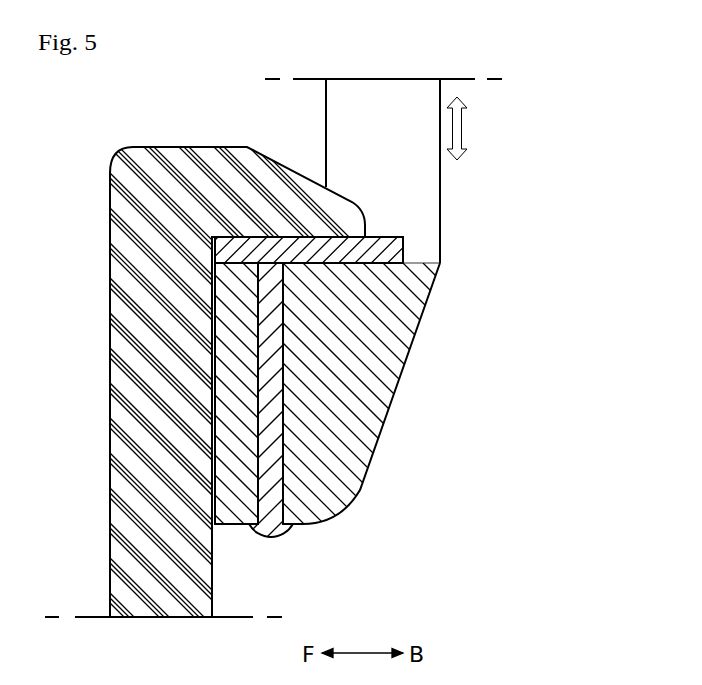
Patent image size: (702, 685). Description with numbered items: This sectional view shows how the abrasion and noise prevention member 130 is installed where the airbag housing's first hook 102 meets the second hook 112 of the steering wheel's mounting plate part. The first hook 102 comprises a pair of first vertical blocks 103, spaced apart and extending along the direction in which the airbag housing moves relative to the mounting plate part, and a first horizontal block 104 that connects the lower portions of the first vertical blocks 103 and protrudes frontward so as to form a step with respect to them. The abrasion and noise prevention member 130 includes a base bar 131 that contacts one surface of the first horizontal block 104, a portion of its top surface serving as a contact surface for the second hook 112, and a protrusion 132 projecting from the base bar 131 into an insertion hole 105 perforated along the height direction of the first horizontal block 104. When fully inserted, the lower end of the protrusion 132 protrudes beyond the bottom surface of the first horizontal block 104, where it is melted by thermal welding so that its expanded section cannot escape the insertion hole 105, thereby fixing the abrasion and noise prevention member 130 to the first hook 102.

The first hook 102 is at (351, 301).
The first vertical block 103 is at (415, 178).
The first horizontal block 104 is at (378, 303).
The insertion hole 105 is at (278, 463).
The second hook 112 is at (162, 160).
The abrasion and noise prevention member 130 is at (281, 387).
The base bar 131 is at (320, 253).
The protrusion 132 is at (270, 422).